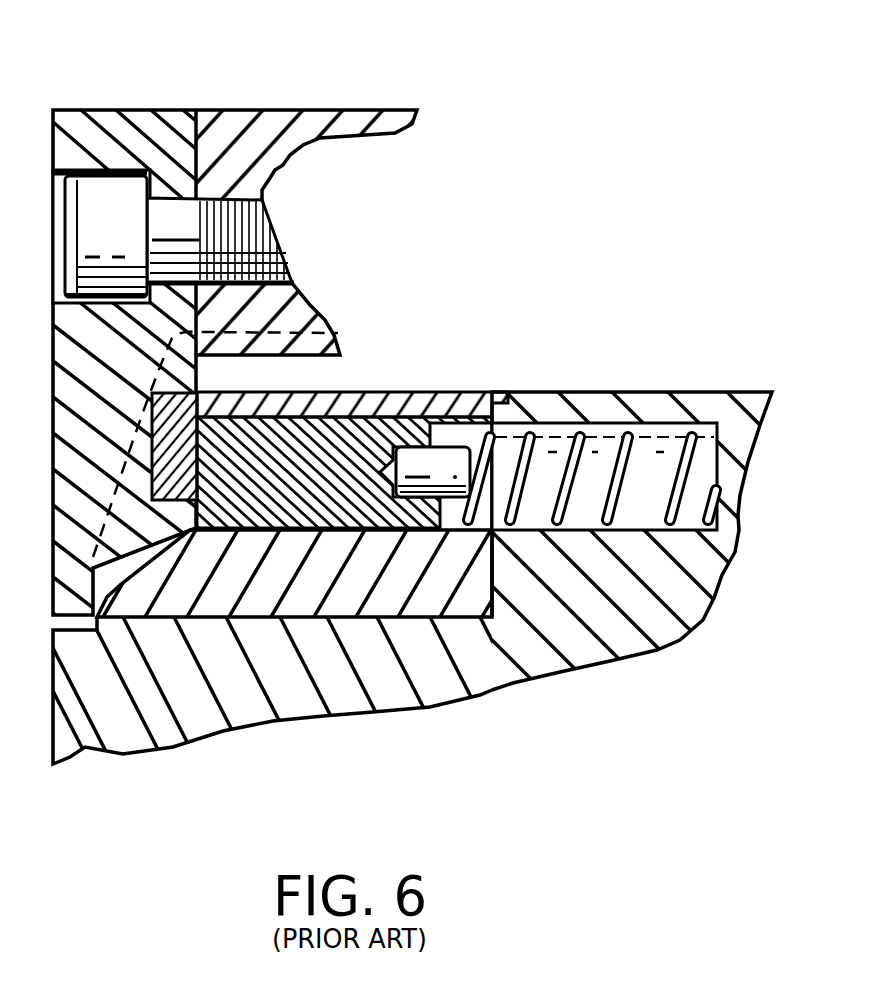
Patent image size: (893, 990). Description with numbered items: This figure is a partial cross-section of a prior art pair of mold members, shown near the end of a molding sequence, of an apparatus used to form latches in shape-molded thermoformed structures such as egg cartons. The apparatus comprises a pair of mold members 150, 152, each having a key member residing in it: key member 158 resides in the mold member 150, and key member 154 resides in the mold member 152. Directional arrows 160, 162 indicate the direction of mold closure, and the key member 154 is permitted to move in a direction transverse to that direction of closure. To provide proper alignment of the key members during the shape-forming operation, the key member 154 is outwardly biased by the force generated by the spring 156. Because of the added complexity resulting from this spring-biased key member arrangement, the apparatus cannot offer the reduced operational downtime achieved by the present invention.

The mold member 150 is at (277, 108).
The mold member 152 is at (707, 392).
The key member 154 is at (360, 390).
The spring 156 is at (650, 427).
The key member 158 is at (200, 450).
The directional arrow 160 is at (120, 96).
The directional arrow 162 is at (125, 766).